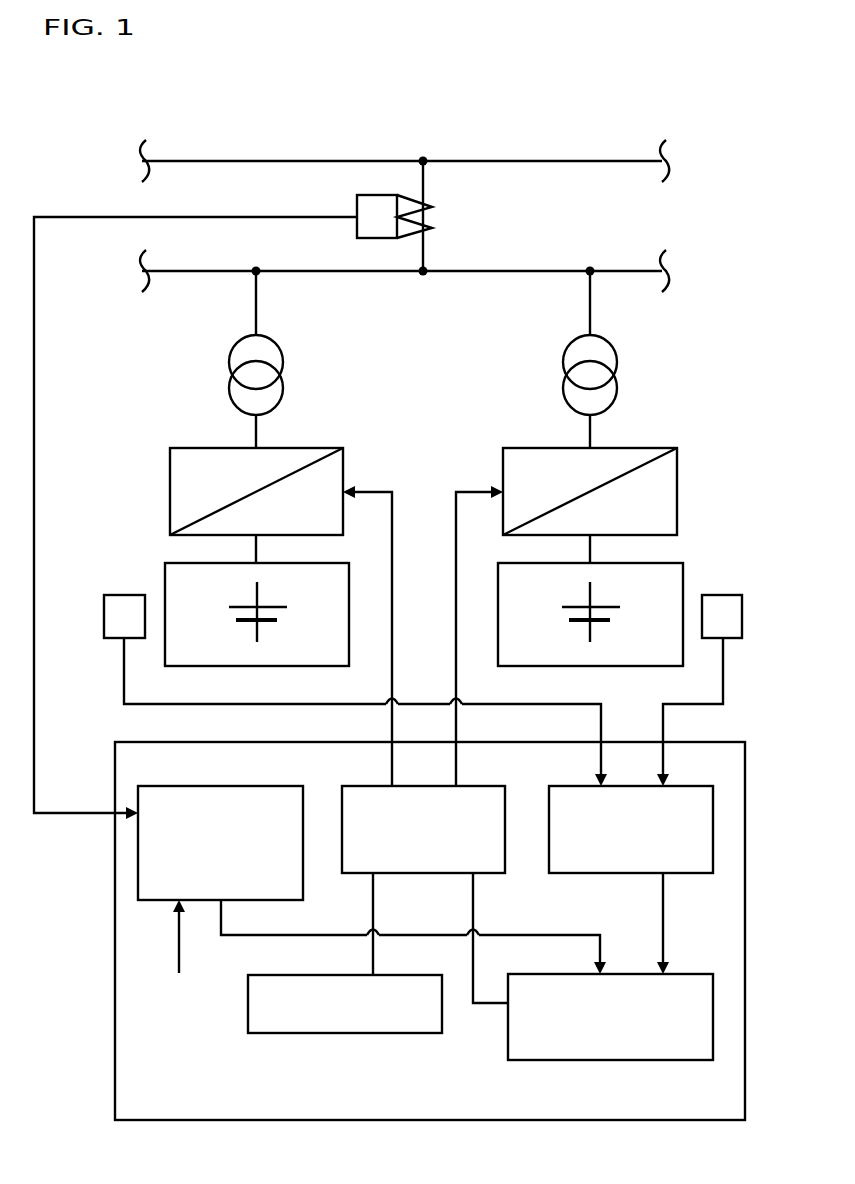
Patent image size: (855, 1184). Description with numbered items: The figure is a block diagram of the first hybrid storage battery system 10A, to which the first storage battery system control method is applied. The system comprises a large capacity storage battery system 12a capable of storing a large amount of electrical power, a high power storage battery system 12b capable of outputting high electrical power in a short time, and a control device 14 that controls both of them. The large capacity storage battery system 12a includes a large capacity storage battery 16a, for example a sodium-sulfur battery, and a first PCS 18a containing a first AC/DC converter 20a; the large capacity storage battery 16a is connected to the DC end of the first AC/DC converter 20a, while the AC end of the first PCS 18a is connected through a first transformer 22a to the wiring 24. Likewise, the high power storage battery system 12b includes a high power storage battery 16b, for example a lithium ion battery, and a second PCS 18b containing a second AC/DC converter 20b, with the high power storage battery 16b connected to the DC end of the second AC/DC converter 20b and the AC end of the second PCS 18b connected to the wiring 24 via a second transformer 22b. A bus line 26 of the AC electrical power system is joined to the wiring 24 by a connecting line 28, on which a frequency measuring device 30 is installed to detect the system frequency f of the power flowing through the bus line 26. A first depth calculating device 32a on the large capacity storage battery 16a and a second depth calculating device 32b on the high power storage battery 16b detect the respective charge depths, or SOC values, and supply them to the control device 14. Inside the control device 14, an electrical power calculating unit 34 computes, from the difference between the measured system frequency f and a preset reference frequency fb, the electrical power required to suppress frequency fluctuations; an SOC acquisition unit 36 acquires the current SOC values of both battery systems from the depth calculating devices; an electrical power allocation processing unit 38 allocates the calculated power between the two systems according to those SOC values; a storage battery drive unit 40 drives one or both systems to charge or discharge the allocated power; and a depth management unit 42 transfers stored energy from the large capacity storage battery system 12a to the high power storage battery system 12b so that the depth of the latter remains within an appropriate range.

The first hybrid storage battery system 10A is at (201, 96).
The large capacity storage battery system 12a is at (126, 472).
The high power storage battery system 12b is at (718, 468).
The control device 14 is at (115, 1008).
The large capacity storage battery 16a is at (165, 571).
The high power storage battery 16b is at (683, 571).
The first PCS 18a is at (325, 443).
The second PCS 18b is at (520, 443).
The first AC/DC converter 20a is at (208, 447).
The second AC/DC converter 20b is at (638, 447).
The first transformer 22a is at (283, 356).
The second transformer 22b is at (565, 356).
The wiring 24 is at (500, 270).
The bus line 26 is at (528, 160).
The connecting line 28 is at (425, 188).
The frequency measuring device 30 is at (357, 205).
The first depth calculating device 32a is at (104, 615).
The second depth calculating device 32b is at (742, 615).
The electrical power calculating unit 34 is at (240, 786).
The SOC acquisition unit 36 is at (679, 786).
The electrical power allocation processing unit 38 is at (605, 1060).
The storage battery drive unit 40 is at (475, 786).
The depth management unit 42 is at (345, 1033).